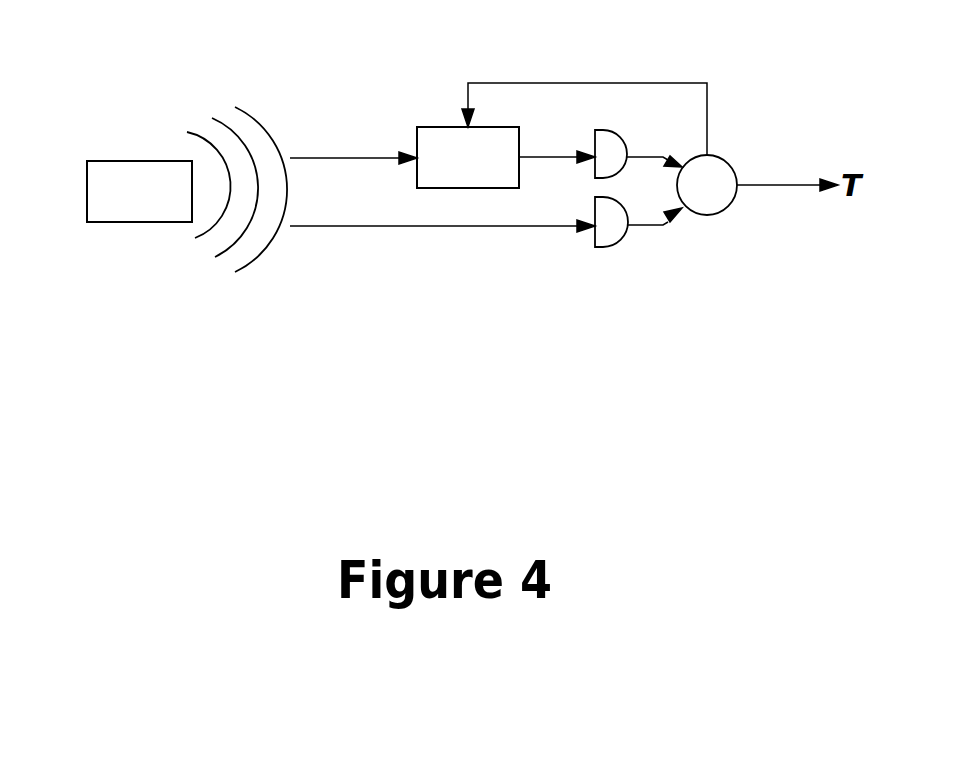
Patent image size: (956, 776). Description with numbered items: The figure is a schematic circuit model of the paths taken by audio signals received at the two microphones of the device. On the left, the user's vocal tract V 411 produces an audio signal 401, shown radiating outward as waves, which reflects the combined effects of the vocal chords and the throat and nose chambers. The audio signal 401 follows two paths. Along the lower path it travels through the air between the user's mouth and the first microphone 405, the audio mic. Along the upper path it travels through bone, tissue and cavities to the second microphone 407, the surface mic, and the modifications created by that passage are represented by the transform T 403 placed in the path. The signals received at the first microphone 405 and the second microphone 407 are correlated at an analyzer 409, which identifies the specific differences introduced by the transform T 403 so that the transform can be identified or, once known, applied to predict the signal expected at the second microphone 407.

The audio signal 401 is at (218, 108).
The transform T 403 is at (417, 127).
The first microphone 405 is at (615, 247).
The second microphone 407 is at (613, 132).
The analyzer 409 is at (727, 160).
The vocal tract V 411 is at (120, 161).